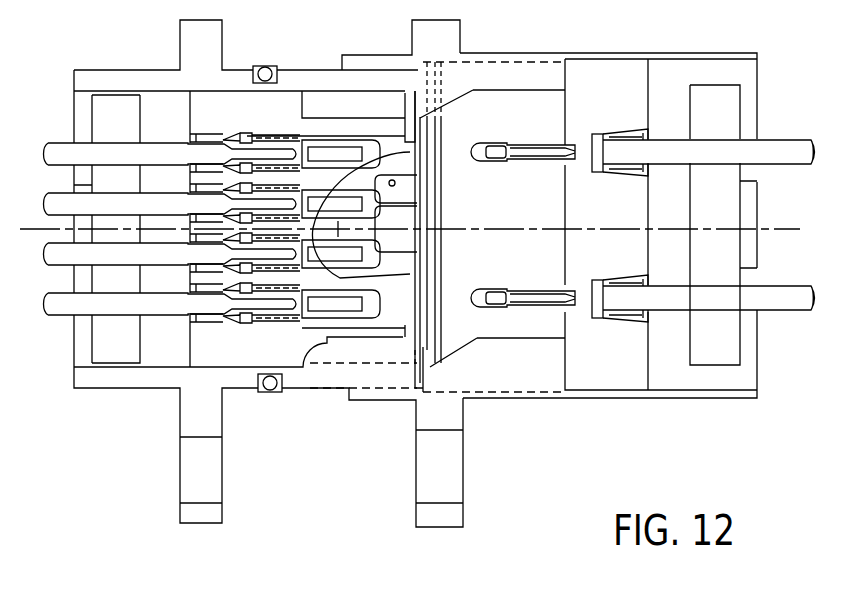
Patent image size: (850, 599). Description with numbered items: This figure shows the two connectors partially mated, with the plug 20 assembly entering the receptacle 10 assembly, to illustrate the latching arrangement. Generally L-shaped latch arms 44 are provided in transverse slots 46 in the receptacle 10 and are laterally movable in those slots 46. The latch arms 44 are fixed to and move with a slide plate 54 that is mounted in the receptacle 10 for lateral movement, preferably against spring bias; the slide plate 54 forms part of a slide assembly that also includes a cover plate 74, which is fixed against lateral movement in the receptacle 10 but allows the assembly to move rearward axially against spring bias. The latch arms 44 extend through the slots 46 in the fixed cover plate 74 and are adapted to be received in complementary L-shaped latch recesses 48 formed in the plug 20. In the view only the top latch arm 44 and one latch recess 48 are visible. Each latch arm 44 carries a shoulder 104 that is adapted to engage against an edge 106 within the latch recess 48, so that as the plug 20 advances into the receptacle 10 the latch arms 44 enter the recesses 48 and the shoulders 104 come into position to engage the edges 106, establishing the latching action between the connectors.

The receptacle 10 is at (573, 400).
The plug 20 is at (128, 394).
The latch arms 44 is at (420, 253).
The transverse slots 46 is at (415, 208).
The L-shaped recesses 48 is at (384, 189).
The slide plate 54 is at (430, 126).
The cover plate 74 is at (440, 148).
The shoulders 104 is at (397, 237).
The edges 106 is at (395, 185).